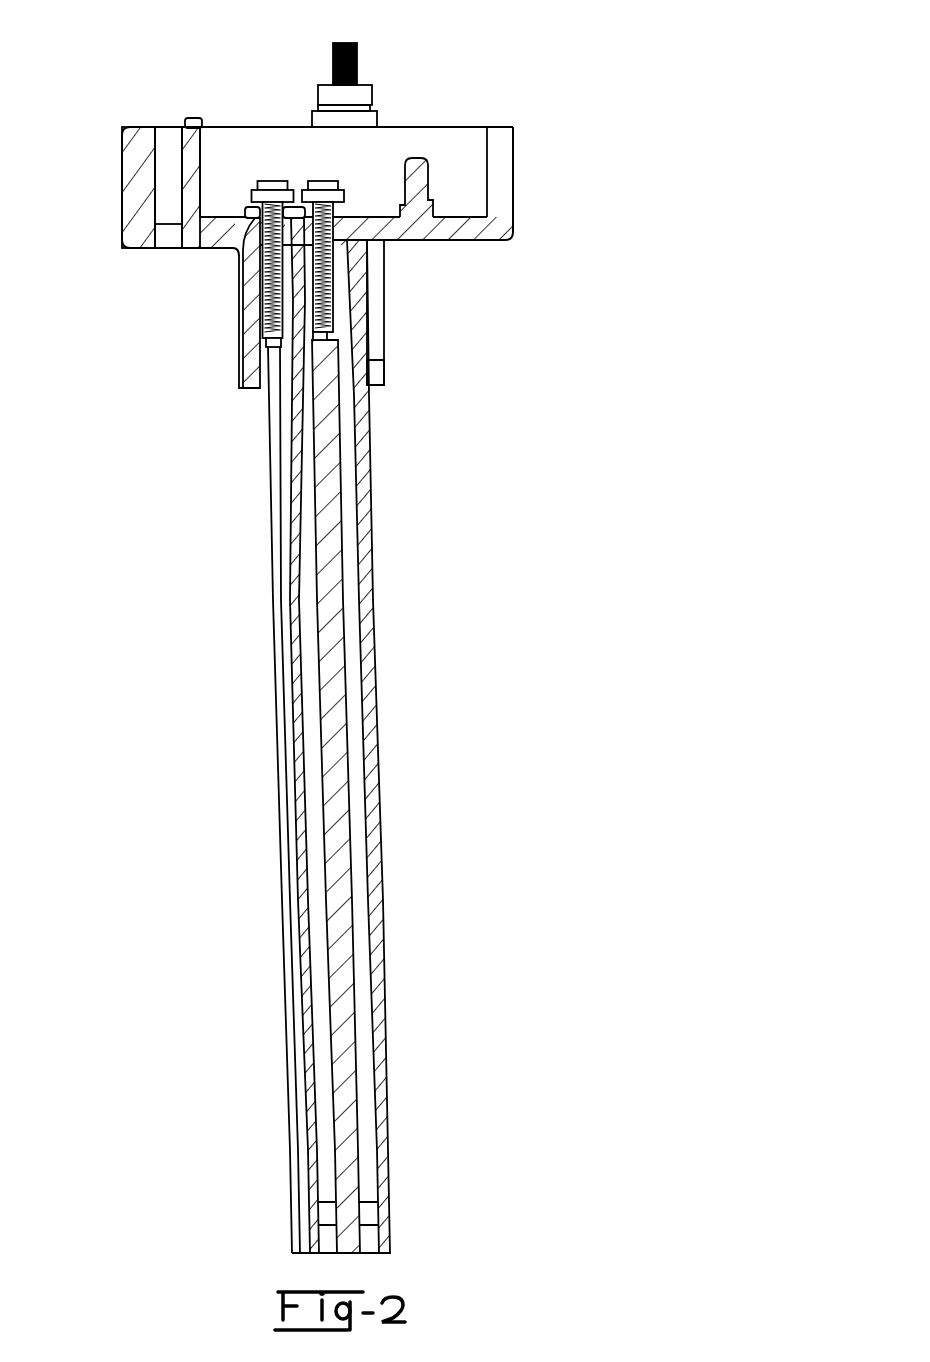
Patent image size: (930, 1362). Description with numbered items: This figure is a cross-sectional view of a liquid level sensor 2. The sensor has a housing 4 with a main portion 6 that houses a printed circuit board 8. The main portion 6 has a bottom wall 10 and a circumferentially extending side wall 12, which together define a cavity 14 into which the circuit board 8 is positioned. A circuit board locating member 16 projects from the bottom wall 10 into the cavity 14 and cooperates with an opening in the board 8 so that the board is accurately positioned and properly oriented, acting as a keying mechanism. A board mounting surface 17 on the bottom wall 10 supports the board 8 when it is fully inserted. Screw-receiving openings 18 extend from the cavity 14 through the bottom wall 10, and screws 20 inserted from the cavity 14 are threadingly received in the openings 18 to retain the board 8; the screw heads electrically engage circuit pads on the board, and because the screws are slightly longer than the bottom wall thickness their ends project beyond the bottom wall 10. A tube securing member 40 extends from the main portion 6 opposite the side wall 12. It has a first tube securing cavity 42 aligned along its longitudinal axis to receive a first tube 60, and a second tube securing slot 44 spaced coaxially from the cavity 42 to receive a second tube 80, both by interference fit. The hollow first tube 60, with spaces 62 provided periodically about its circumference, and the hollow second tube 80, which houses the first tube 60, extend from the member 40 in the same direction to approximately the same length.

The liquid level sensor 2 is at (558, 62).
The housing 4 is at (555, 177).
The main portion 6 is at (120, 192).
The printed circuit board 8 is at (515, 212).
The bottom wall 10 is at (190, 251).
The side wall 12 is at (514, 130).
The cavity 14 is at (243, 126).
The circuit board locating member 16 is at (490, 247).
The board mounting surface 17 is at (412, 242).
The screw-receiving openings 18 is at (237, 250).
The screws 20 is at (272, 348).
The tube securing member 40 is at (386, 374).
The first tube securing cavity 42 is at (385, 316).
The second tube securing slot 44 is at (385, 360).
The first tube 60 is at (330, 606).
The spaces 62 is at (372, 1212).
The second tube 80 is at (372, 889).